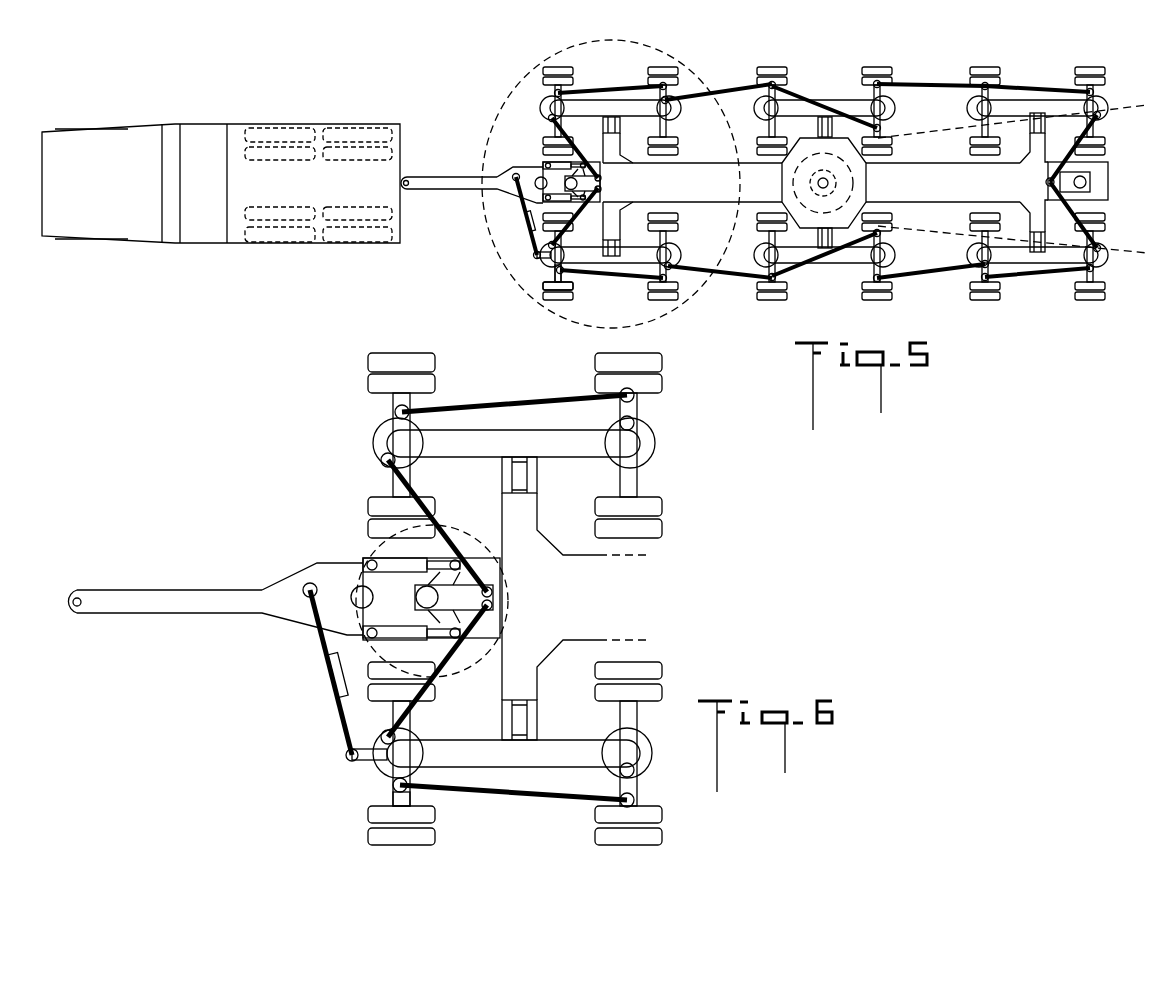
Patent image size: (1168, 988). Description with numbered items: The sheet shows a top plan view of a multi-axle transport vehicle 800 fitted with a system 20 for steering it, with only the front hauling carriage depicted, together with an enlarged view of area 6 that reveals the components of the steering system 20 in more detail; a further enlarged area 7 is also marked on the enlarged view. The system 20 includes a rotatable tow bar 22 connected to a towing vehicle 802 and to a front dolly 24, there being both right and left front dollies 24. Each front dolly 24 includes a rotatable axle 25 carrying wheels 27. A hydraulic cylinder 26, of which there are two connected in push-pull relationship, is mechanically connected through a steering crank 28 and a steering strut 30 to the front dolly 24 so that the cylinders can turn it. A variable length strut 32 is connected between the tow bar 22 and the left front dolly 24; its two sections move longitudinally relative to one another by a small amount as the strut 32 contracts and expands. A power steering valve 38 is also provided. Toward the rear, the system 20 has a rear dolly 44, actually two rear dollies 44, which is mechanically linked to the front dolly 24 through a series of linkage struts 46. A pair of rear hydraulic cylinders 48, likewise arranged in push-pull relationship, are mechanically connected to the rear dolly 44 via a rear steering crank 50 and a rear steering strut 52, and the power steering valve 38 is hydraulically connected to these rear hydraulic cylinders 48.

In FIG. 5, the multi-axle transport vehicle 800 is at (912, 64).
In FIG. 5, the towing vehicle 802 is at (357, 124).
In FIG. 5, the area 6 is at (522, 78).
In FIG. 6, the area shown in FIG. 7 is at (504, 576).
In FIG. 5, the system for steering 20 is at (799, 194).
In FIG. 6, the system for steering 20 is at (462, 599).
In FIG. 5, the rotatable tow bar 22 is at (418, 178).
In FIG. 6, the rotatable tow bar 22 is at (158, 592).
In FIG. 5, the front dolly 24 is at (567, 105).
In FIG. 6, the front dolly 24 is at (378, 448).
In FIG. 5, the rotatable axle 25 is at (555, 282).
In FIG. 6, the rotatable axle 25 is at (415, 800).
In FIG. 5, the hydraulic cylinder 26 is at (582, 183).
In FIG. 6, the hydraulic cylinder 26 is at (365, 620).
In FIG. 5, the wheels 27 is at (560, 298).
In FIG. 6, the wheels 27 is at (380, 818).
In FIG. 5, the steering crank 28 is at (583, 184).
In FIG. 6, the steering crank 28 is at (458, 598).
In FIG. 5, the steering strut 30 is at (568, 158).
In FIG. 6, the steering strut 30 is at (455, 530).
In FIG. 5, the variable length strut 32 is at (525, 238).
In FIG. 6, the variable length strut 32 is at (338, 727).
In FIG. 5, the power steering valve 38 is at (527, 221).
In FIG. 6, the power steering valve 38 is at (333, 688).
In FIG. 5, the rear dolly 44 is at (1100, 100).
In FIG. 5, the linkage struts 46 is at (628, 283).
In FIG. 6, the linkage struts 46 is at (578, 806).
In FIG. 5, the rear hydraulic cylinders 48 is at (1105, 200).
In FIG. 5, the rear steering crank 50 is at (1046, 186).
In FIG. 5, the rear steering strut 52 is at (1072, 152).